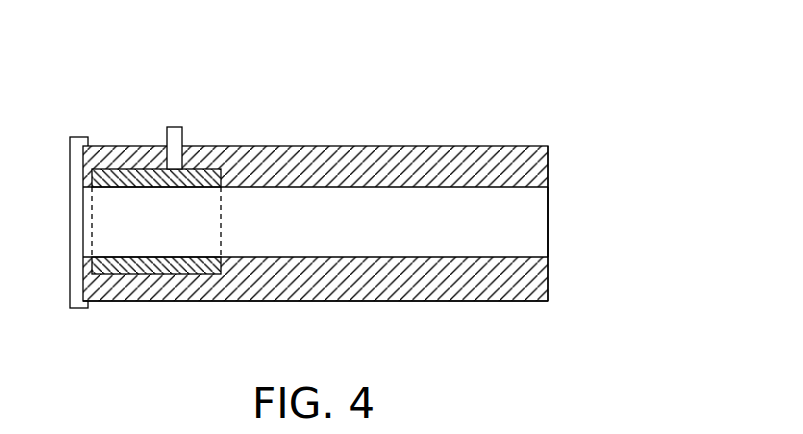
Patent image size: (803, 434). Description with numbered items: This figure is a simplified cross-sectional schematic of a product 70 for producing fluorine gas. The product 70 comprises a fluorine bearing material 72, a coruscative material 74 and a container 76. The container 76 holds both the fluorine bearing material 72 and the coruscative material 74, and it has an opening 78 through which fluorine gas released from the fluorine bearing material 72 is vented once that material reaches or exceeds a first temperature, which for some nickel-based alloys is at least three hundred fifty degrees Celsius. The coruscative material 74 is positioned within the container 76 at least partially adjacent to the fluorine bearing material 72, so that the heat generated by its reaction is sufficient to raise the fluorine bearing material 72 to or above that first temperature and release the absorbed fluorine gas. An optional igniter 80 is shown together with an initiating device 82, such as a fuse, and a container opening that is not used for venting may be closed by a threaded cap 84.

The product 70 is at (418, 109).
The fluorine bearing material 72 is at (360, 233).
The coruscative material 74 is at (527, 162).
The container 76 is at (479, 302).
The opening 78 is at (560, 218).
The igniter 80 is at (122, 171).
The initiating device 82 is at (175, 133).
The threaded cap 84 is at (76, 293).